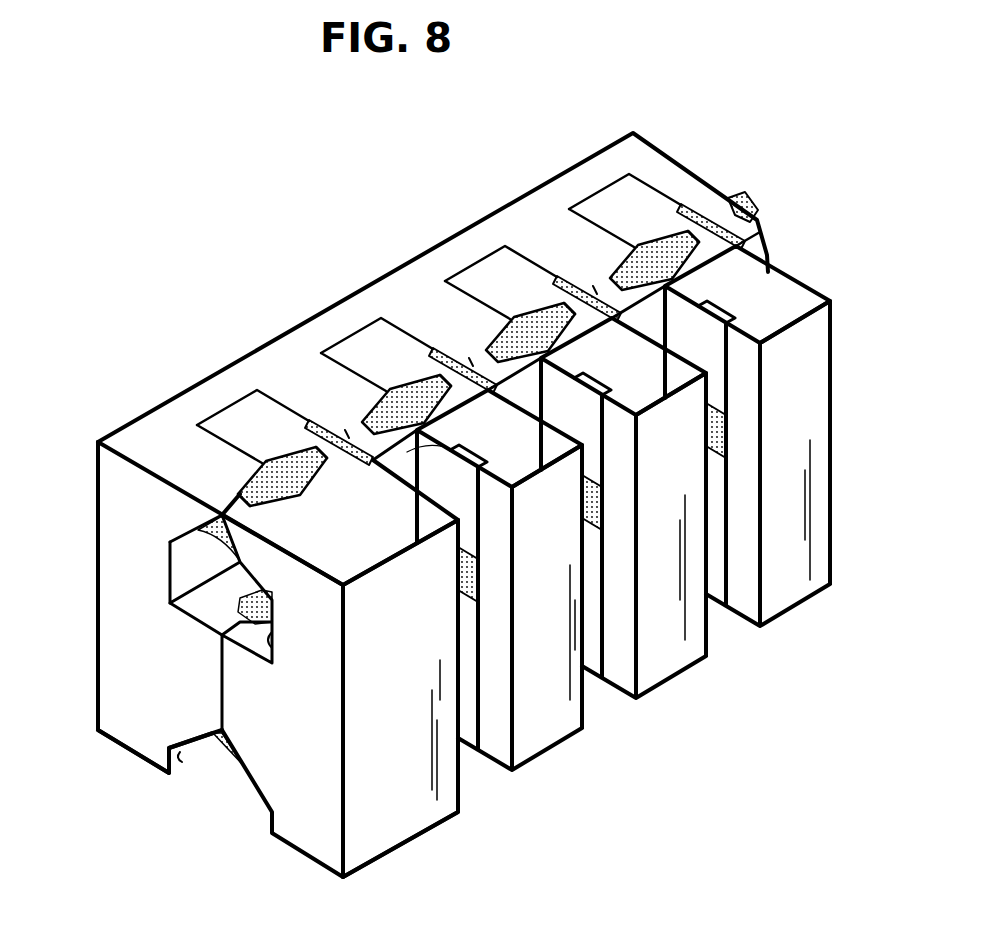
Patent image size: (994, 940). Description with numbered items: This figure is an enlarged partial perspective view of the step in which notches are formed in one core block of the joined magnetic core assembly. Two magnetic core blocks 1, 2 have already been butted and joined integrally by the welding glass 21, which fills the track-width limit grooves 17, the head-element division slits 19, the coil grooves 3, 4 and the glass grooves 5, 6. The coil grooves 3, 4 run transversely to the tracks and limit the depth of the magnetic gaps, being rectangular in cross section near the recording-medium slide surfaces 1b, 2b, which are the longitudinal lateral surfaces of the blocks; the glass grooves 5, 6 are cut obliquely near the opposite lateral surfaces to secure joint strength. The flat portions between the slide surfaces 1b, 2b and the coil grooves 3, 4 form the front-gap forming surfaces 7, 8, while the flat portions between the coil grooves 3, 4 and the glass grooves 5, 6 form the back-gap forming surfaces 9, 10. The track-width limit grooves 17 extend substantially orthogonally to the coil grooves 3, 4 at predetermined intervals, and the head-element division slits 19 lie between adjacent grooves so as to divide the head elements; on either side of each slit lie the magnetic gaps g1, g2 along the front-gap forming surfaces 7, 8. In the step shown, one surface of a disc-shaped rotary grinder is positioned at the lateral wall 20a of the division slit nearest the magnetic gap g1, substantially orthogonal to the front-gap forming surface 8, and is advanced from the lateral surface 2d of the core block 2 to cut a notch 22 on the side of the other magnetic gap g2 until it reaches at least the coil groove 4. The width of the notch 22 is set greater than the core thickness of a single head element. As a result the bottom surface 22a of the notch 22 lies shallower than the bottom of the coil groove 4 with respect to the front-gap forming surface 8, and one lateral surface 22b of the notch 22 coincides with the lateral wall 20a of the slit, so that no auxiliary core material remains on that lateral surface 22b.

The magnetic core block 1 is at (113, 634).
The recording-medium slide surface 1b is at (170, 410).
The magnetic core block 2 is at (307, 830).
The recording-medium slide surface 2b is at (353, 562).
The lateral surface 2d is at (418, 805).
The coil groove 3 is at (178, 566).
The coil groove 4 is at (270, 643).
The glass groove 5 is at (181, 772).
The glass groove 6 is at (272, 822).
The front-gap forming surface 7 is at (220, 514).
The front-gap forming surface 8 is at (196, 619).
The back-gap forming surface 9 is at (222, 690).
The back-gap forming surface 10 is at (191, 740).
The track-width limit groove 17 is at (263, 463).
The head-element division slit 19 is at (315, 425).
The lateral wall of head-element division slit 20a is at (348, 452).
The welding glass 21 is at (242, 490).
The notch 22 is at (522, 765).
The bottom surface of notch 22a is at (462, 448).
The lateral surface of notch 22b is at (430, 497).
The magnetic gap g1 is at (323, 449).
The magnetic gap g2 is at (347, 427).